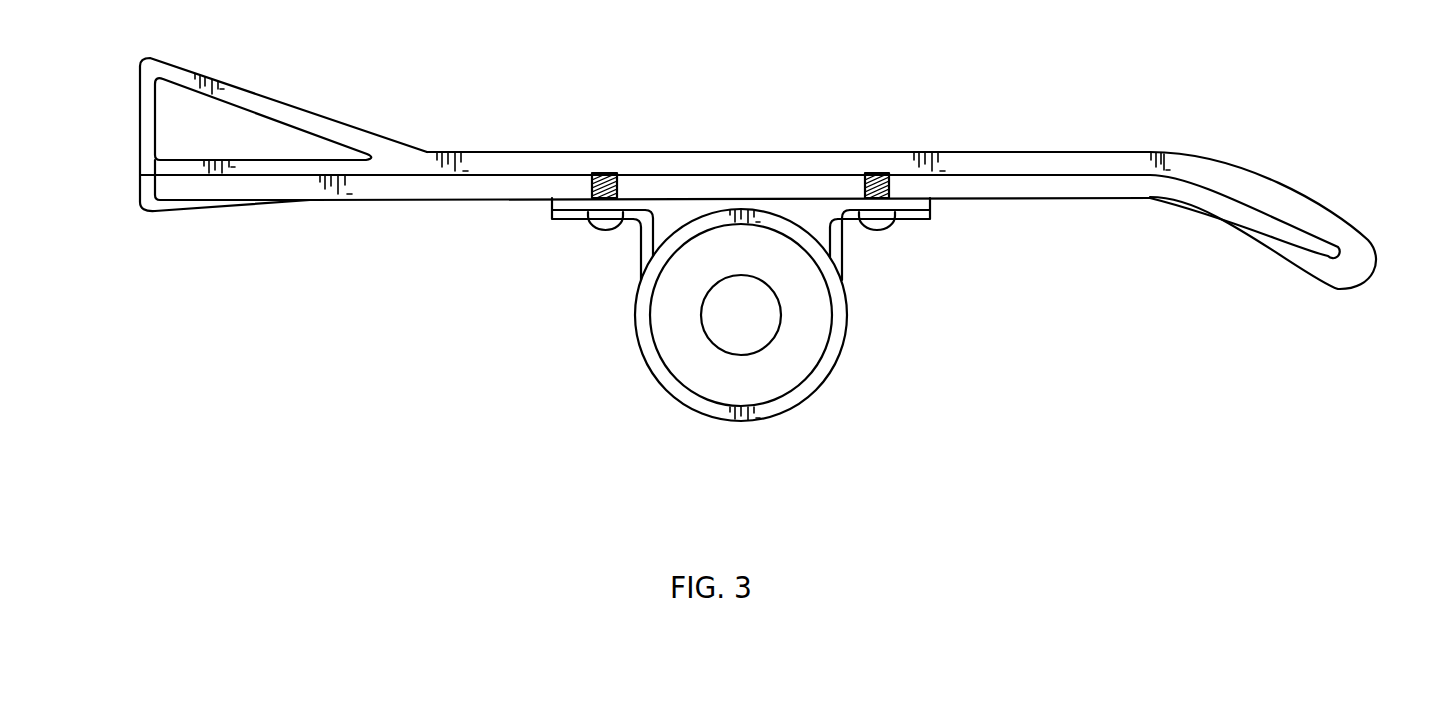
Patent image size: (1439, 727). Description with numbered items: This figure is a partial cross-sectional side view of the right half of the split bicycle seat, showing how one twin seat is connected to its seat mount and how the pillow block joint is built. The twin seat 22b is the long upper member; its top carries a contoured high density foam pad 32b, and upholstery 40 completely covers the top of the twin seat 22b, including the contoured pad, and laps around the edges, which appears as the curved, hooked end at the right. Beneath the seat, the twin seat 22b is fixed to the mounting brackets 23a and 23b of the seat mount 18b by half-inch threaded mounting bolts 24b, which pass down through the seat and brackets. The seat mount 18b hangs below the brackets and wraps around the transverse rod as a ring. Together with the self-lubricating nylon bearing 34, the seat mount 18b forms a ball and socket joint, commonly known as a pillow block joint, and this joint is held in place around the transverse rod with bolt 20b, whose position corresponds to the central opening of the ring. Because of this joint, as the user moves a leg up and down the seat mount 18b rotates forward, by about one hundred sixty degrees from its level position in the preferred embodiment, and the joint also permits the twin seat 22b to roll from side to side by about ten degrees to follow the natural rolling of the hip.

The contoured high density foam pad 32b is at (257, 132).
The upholstery 40 is at (1230, 163).
The twin seat 22b is at (1300, 220).
The mounting bracket 23a is at (552, 210).
The mounting bracket 23b is at (943, 211).
The mounting bolts 24b is at (590, 227).
The seat mount 18b is at (635, 315).
The self-lubricating nylon bearing 34 is at (807, 360).
The threaded bolt 20b is at (727, 330).